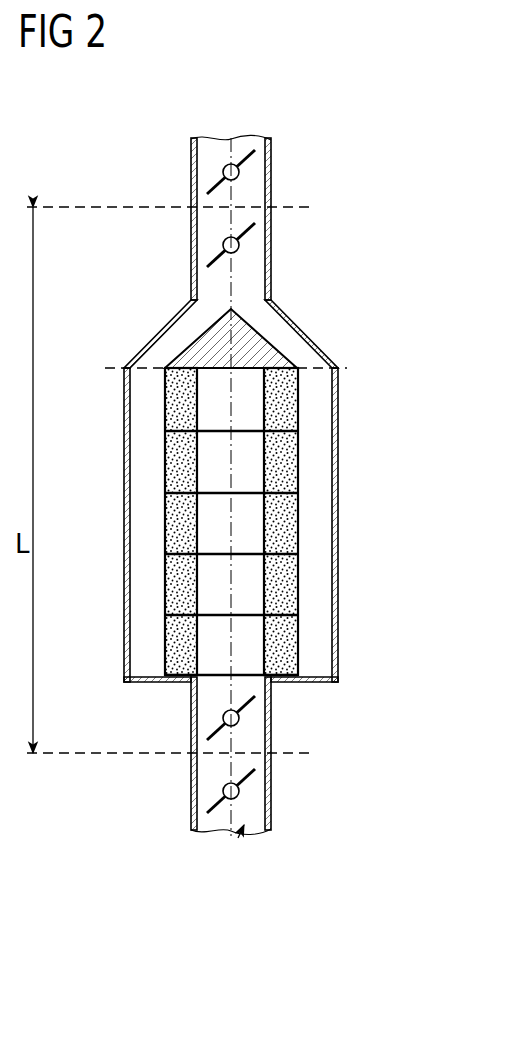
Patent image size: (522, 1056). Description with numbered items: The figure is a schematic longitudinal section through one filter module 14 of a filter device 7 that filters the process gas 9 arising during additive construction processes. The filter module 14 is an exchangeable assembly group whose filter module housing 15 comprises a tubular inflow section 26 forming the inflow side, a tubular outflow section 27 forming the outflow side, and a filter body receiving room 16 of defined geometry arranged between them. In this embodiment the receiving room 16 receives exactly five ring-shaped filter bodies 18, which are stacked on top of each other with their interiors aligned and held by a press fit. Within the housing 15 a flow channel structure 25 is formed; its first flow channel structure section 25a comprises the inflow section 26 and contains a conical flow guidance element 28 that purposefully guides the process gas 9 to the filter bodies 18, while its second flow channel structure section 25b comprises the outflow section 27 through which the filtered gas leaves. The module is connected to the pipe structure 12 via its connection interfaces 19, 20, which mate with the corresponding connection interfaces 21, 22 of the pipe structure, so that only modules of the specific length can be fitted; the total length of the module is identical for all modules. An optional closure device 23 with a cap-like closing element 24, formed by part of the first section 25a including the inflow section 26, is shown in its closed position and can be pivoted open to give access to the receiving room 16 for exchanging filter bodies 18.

The filter device 7 is at (218, 447).
The filter module 14 is at (313, 85).
The pipe structure 12 is at (273, 157).
The connection interface of the pipe structure 21 is at (278, 202).
The connection interface of the filter module 19 is at (278, 214).
The first flow channel structure section 25a is at (156, 208).
The inflow section 26 is at (217, 223).
The flow guidance element 28 is at (208, 350).
The closing element 24 is at (300, 330).
The closure device 23 is at (343, 358).
The filter module housing 15 is at (338, 435).
The filter body receiving room 16 is at (313, 463).
The flow channel structure 25 is at (147, 434).
The filter body 18 is at (287, 585).
The second flow channel structure section 25b is at (157, 754).
The outflow section 27 is at (212, 704).
The connection interface of the filter module 20 is at (279, 752).
The connection interface of the pipe structure 22 is at (279, 761).
The process gas 9 is at (245, 829).